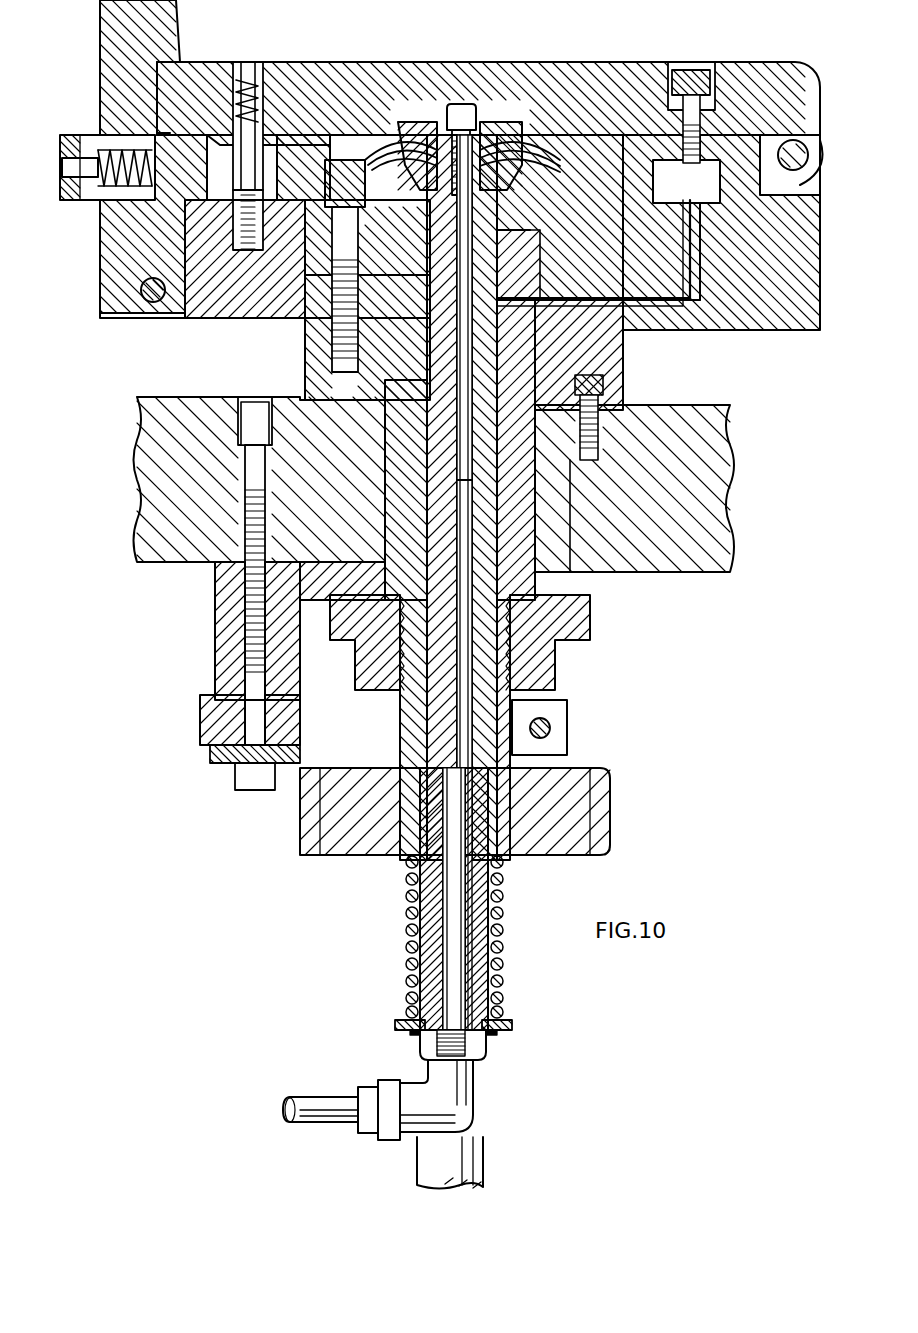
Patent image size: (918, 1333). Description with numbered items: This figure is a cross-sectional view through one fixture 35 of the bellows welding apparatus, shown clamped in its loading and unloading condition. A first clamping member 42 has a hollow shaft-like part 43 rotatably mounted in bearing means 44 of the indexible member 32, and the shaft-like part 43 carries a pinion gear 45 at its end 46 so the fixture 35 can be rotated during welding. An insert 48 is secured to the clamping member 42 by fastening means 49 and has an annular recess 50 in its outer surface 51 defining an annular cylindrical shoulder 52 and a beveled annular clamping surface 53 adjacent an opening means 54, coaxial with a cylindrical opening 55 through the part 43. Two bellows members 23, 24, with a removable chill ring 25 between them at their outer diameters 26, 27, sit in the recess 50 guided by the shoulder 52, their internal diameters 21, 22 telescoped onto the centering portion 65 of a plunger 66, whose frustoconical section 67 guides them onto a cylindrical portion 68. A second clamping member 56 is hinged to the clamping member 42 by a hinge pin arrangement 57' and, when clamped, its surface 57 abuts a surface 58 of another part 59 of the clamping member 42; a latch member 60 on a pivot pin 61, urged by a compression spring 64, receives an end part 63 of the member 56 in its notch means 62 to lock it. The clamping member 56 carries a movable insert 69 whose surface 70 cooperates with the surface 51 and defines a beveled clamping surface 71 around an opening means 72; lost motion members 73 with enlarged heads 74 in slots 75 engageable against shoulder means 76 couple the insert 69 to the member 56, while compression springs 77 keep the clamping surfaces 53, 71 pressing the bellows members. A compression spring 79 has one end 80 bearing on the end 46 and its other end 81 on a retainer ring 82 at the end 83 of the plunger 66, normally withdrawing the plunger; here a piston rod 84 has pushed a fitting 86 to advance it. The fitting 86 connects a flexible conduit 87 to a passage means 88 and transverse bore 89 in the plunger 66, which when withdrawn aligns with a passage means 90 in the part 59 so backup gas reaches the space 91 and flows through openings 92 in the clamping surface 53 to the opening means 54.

The internal diameter 21 is at (490, 135).
The internal diameter 22 is at (478, 125).
The bellows member 23 is at (398, 140).
The bellows member 24 is at (410, 172).
The chill ring 25 is at (335, 168).
The outer diameter 26 is at (380, 140).
The outer diameter 27 is at (405, 162).
The indexible member 32 is at (718, 508).
The fixture 35 is at (95, 283).
The first clamping member 42 is at (765, 320).
The shaft-like part 43 is at (623, 360).
The bearing means 44 is at (565, 508).
The pinion gear 45 is at (570, 768).
The end 46 is at (495, 850).
The insert 48 is at (650, 182).
The fastening means 49 is at (345, 232).
The annular recess 50 is at (558, 140).
The outer surface 51 is at (620, 135).
The annular internal cylindrical shoulder 52 is at (562, 140).
The annular beveled clamping surface 53 is at (405, 195).
The cylindrical opening means 54 is at (515, 250).
The cylindrical opening 55 is at (488, 468).
The second clamping member 56 is at (236, 62).
The surface 57 is at (116, 116).
The hinge pin arrangement 57' is at (807, 165).
The surface 58 is at (740, 135).
The part 59 is at (248, 305).
The latch member 60 is at (118, 55).
The pivot pin 61 is at (150, 302).
The notch means 62 is at (178, 62).
The end part 63 is at (168, 80).
The compression spring 64 is at (112, 186).
The centering portion 65 is at (420, 122).
The plunger 66 is at (485, 385).
The frustoconical section 67 is at (497, 122).
The cylindrical portion 68 is at (515, 172).
The movable insert 69 is at (298, 75).
The surface 70 is at (340, 130).
The beveled annular clamping surface 71 is at (398, 135).
The opening means 72 is at (555, 135).
The lost motion members 73 is at (672, 105).
The enlarged head 74 is at (690, 72).
The slot 75 is at (712, 85).
The shoulder means 76 is at (718, 100).
The compression springs 77 is at (258, 80).
The compression spring 79 is at (503, 950).
The end 80 is at (405, 865).
The end 81 is at (505, 1010).
The retainer ring 82 is at (512, 1025).
The end 83 is at (488, 1060).
The piston rod 84 is at (480, 1160).
The fitting 86 is at (470, 1095).
The flexible conduit 87 is at (330, 1118).
The passage means 88 is at (445, 950).
The transverse bore 89 is at (510, 232).
The passage means 90 is at (670, 325).
The space 91 is at (728, 210).
The openings 92 is at (520, 160).